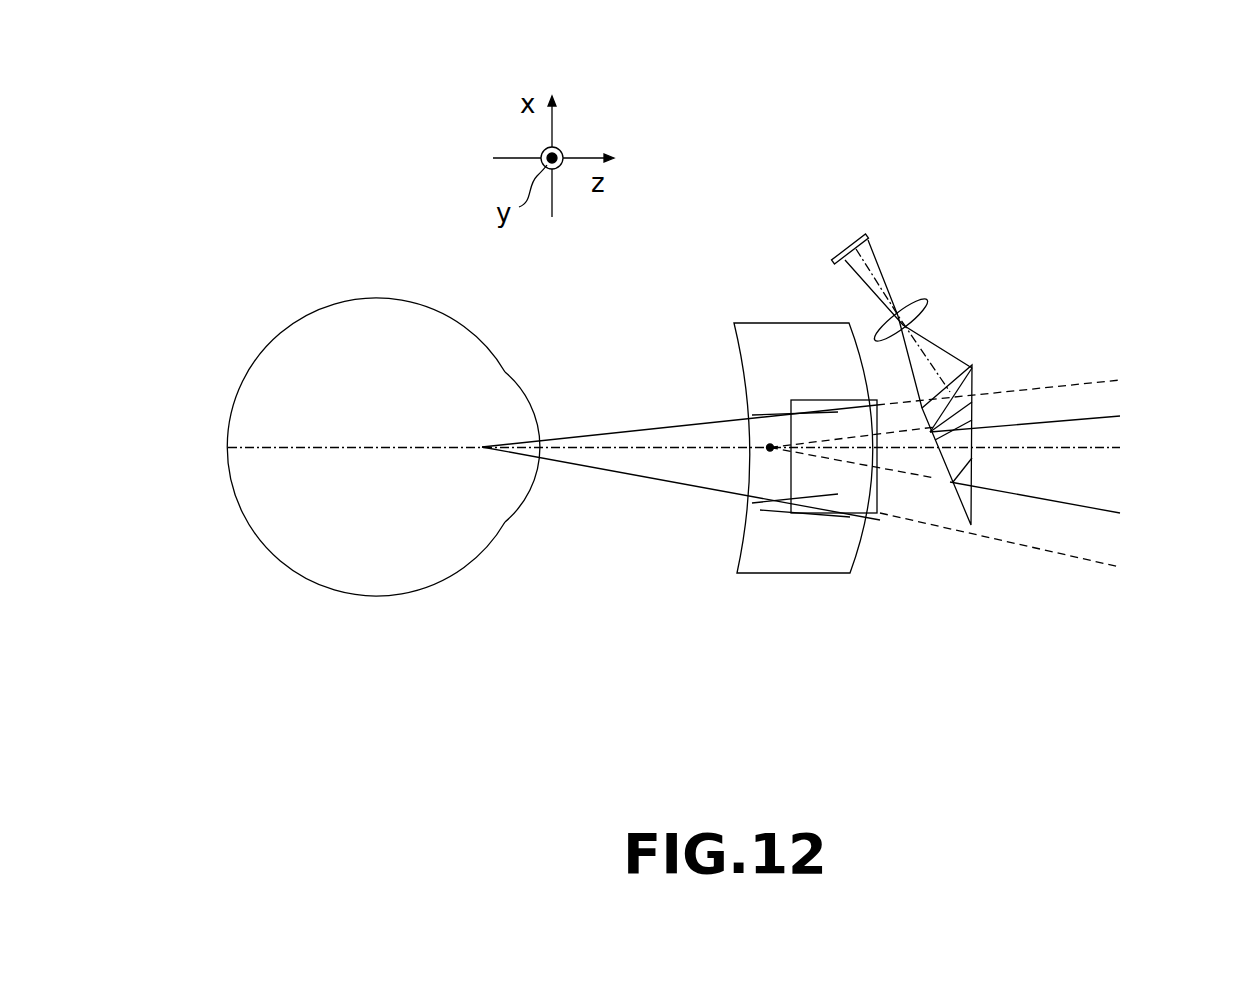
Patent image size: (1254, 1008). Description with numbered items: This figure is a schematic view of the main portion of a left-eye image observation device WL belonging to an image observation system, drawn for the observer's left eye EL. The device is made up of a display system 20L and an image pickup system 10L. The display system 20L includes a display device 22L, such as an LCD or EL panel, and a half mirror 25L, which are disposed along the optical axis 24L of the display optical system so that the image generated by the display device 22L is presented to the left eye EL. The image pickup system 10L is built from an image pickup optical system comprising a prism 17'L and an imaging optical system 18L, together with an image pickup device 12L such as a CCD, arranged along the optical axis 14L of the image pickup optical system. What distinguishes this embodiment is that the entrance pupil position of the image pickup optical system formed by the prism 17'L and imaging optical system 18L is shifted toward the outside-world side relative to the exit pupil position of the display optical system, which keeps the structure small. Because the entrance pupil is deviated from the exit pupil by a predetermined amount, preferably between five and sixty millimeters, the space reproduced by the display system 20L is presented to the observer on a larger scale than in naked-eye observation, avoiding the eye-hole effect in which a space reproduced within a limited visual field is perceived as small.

The left eye EL is at (365, 370).
The left-eye image observation device WL is at (779, 176).
The image pickup system 10L is at (1027, 336).
The image pickup device 12L is at (860, 240).
The imaging optical system 18L is at (926, 300).
The prism 17'L is at (998, 407).
The optical axis of the image pickup optical system 14L is at (1063, 448).
The display system 20L is at (532, 658).
The display device 22L is at (847, 507).
The optical axis of the display optical system 24L is at (622, 452).
The half mirror 25L is at (738, 560).